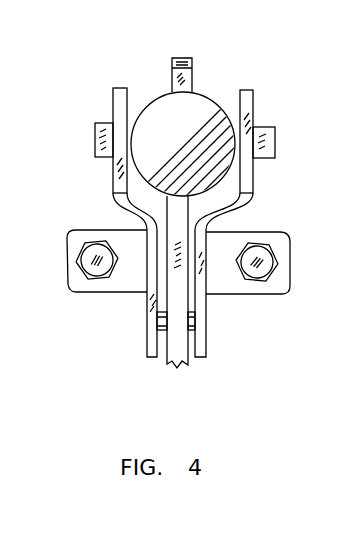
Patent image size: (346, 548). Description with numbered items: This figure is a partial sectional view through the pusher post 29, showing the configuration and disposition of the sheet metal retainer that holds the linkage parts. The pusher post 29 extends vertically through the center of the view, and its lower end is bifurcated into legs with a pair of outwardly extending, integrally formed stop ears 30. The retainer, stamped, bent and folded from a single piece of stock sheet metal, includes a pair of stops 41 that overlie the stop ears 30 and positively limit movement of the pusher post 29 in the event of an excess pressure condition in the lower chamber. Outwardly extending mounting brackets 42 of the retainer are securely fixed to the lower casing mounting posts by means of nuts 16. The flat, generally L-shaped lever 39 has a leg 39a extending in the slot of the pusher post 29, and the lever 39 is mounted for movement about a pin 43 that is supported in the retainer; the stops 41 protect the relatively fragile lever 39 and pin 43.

The pusher post 29 is at (152, 102).
The leg of lever 39a is at (192, 73).
The stops 41 is at (113, 108).
The stop ears 30 is at (95, 137).
The mounting brackets 42 is at (282, 232).
The nuts 16 is at (84, 283).
The lever 39 is at (153, 272).
The pin 43 is at (195, 328).